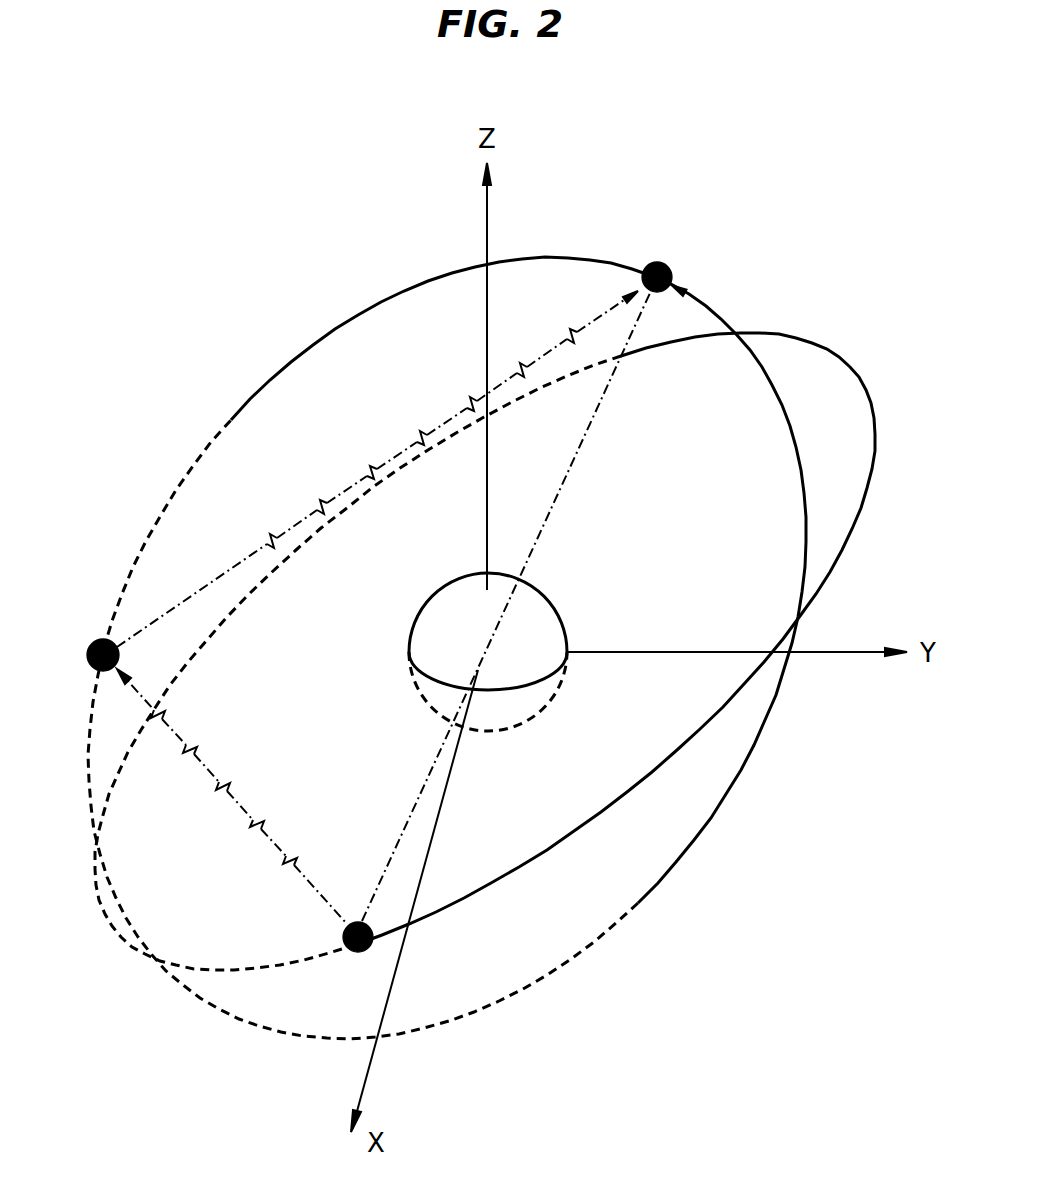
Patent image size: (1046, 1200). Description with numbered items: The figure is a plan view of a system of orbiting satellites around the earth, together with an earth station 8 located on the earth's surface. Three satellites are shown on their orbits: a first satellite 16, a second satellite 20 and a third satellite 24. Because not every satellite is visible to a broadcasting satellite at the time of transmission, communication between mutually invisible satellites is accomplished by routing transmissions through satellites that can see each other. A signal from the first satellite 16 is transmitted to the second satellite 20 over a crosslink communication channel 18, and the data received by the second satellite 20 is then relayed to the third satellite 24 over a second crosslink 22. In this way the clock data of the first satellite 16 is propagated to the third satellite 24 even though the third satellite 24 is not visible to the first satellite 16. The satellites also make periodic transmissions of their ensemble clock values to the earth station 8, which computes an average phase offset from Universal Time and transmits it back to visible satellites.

The earth station 8 is at (544, 622).
The first satellite 16 is at (358, 922).
The crosslink communication channel 18 is at (263, 833).
The second satellite 20 is at (103, 640).
The second crosslink 22 is at (332, 513).
The third satellite 24 is at (670, 268).